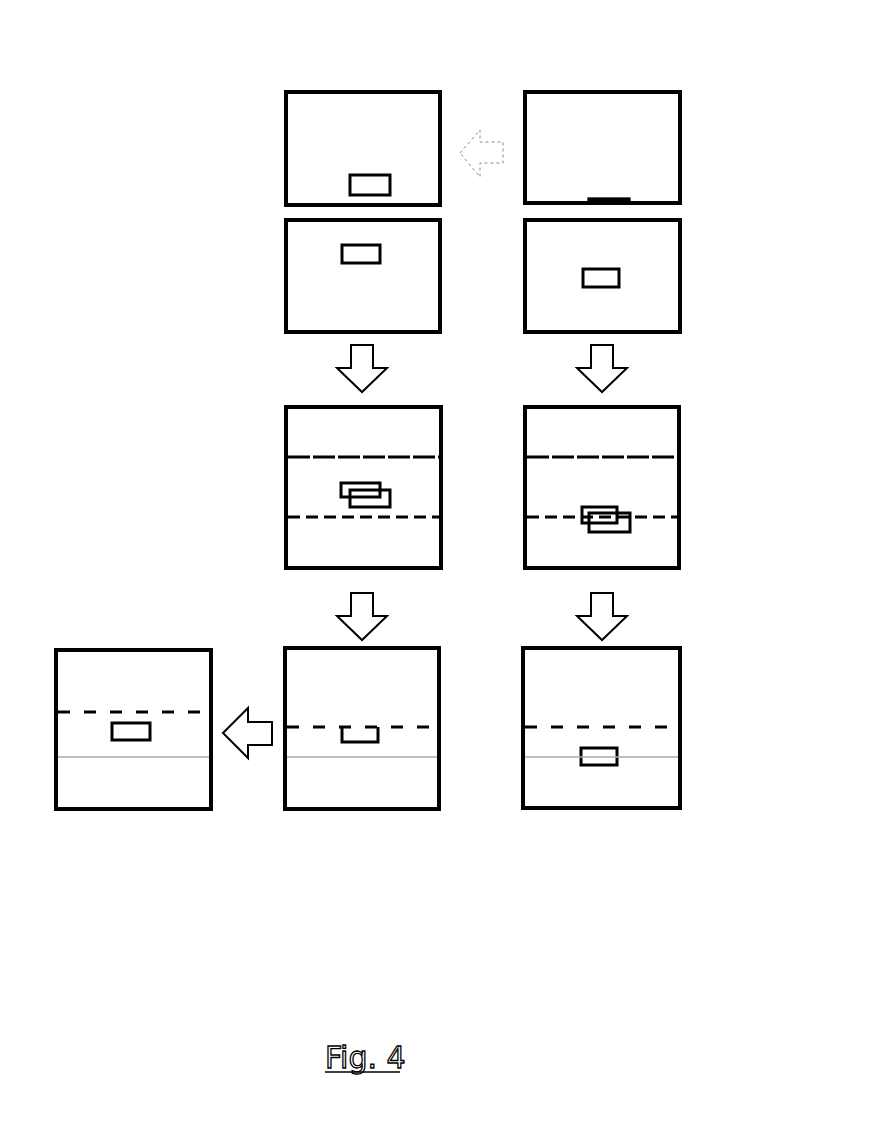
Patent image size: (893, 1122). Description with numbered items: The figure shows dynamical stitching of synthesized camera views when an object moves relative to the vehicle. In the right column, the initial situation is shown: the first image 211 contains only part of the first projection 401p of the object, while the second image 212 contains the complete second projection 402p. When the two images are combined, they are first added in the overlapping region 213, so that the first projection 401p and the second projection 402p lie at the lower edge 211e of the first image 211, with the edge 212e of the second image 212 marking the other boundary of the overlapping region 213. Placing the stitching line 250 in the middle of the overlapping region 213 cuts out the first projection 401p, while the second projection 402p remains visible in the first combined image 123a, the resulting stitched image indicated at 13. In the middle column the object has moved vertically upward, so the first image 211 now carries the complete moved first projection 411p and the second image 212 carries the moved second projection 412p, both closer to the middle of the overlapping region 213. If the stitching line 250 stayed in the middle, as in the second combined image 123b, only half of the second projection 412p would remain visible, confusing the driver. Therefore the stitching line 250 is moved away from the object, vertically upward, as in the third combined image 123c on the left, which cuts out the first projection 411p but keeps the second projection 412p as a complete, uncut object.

The first image 211 is at (308, 142).
The second image 212 is at (300, 255).
The overlapping region 213 is at (298, 492).
The moved first projection 411p is at (347, 185).
The moved second projection 412p is at (337, 253).
The first projection 401p is at (630, 198).
The second projection 402p is at (620, 275).
The edge of second layer 212e is at (507, 461).
The lower edge of the first image 211e is at (507, 521).
The stitching line 250 is at (93, 712).
The laminated sheet 13 is at (570, 695).
The third combined image 123c is at (180, 673).
The second combined image 123b is at (308, 792).
The first combined image 123a is at (550, 792).